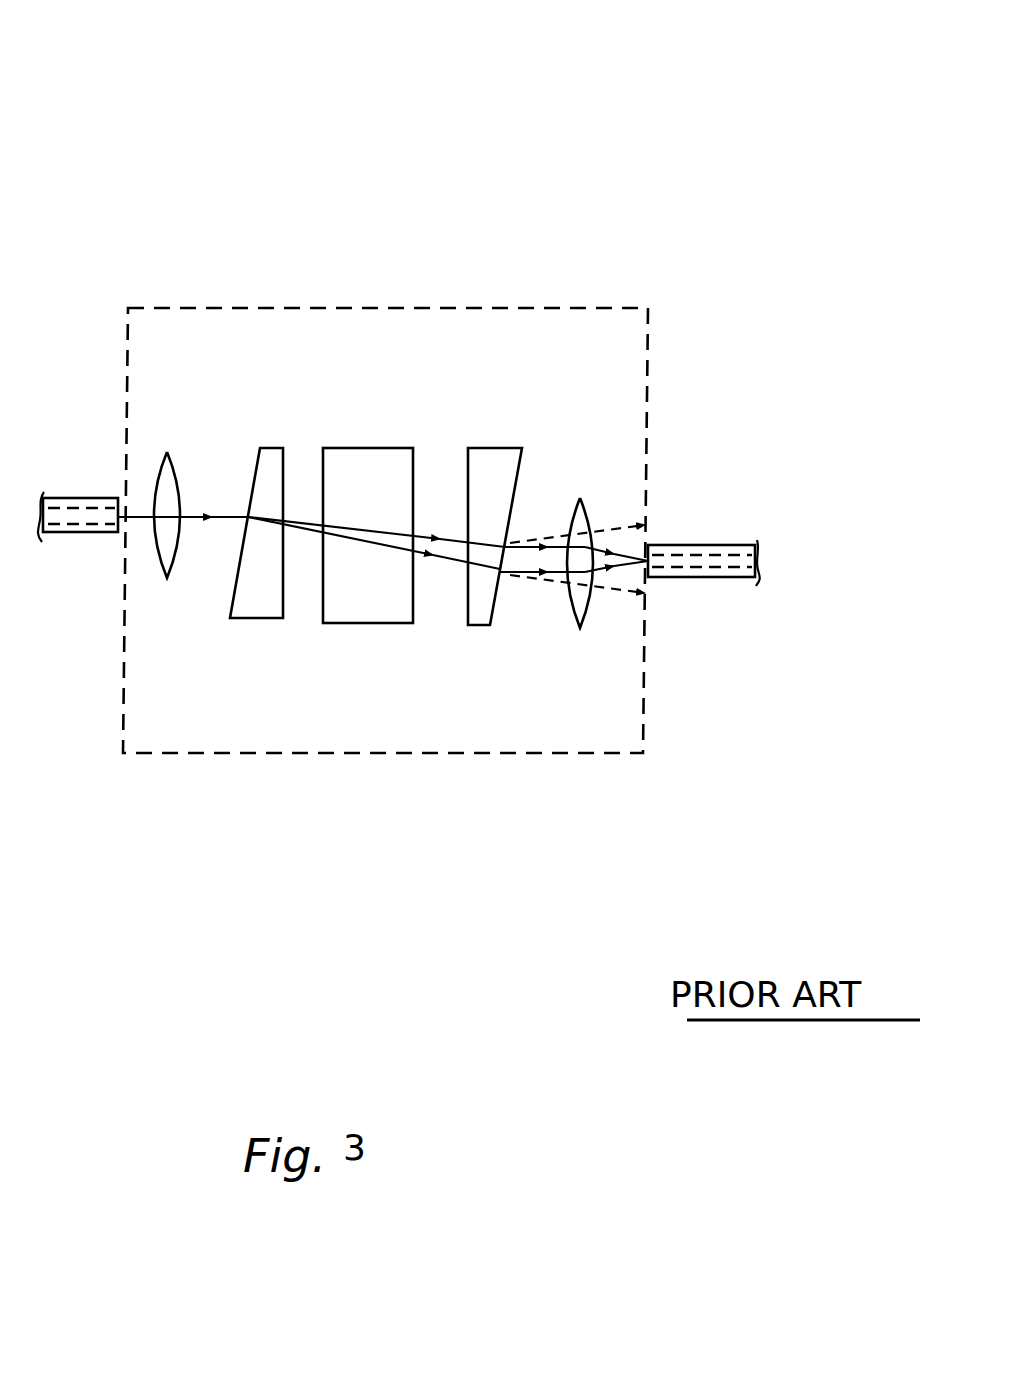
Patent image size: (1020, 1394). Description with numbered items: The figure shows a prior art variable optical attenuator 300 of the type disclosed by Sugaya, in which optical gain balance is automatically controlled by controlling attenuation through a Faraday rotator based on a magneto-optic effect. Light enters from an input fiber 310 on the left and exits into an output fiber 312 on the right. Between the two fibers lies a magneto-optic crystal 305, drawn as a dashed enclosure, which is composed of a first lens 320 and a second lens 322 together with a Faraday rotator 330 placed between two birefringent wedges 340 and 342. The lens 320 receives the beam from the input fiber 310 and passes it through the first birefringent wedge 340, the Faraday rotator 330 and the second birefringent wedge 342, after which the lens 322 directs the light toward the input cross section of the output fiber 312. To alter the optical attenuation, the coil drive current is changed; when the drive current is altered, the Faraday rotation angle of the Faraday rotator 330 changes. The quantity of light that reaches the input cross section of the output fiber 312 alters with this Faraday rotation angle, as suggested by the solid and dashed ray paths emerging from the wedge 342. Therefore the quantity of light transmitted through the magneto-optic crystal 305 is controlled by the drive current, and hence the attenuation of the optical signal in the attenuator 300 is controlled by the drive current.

The variable optical attenuator 300 is at (548, 118).
The magneto-optic crystal 305 is at (652, 329).
The input fiber 310 is at (80, 498).
The output fiber 312 is at (688, 545).
The lens 320 is at (167, 452).
The lens 322 is at (590, 505).
The Faraday rotator 330 is at (403, 448).
The birefringent wedge 340 is at (273, 447).
The birefringent wedge 342 is at (508, 448).